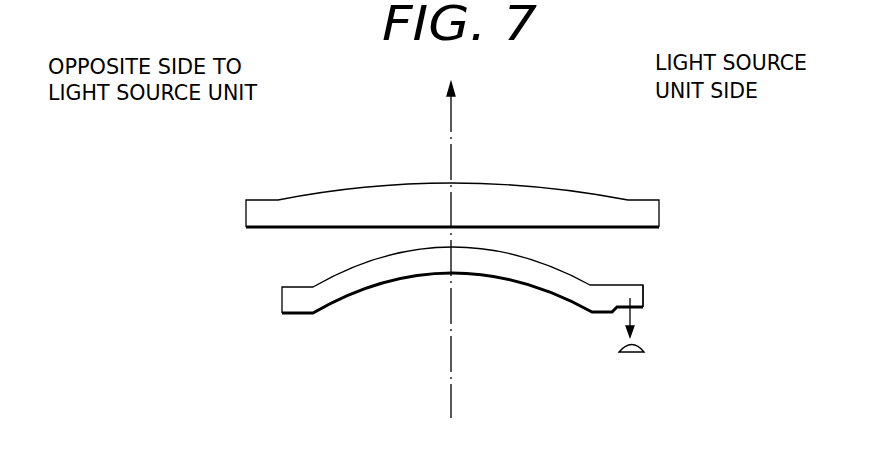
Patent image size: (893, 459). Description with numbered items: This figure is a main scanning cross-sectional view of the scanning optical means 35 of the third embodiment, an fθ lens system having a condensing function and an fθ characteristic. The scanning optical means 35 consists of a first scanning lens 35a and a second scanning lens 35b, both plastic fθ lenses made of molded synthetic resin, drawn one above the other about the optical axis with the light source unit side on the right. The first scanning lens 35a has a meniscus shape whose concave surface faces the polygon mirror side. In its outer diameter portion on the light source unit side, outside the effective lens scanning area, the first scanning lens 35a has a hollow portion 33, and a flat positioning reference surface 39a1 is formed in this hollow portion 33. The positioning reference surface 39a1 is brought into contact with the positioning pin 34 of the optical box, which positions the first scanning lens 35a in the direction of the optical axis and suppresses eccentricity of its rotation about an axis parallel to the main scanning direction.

The scanning optical means 35 is at (215, 147).
The first scanning lens 35a is at (350, 284).
The second scanning lens 35b is at (375, 197).
The positioning reference surface 39a1 is at (645, 290).
The hollow portion 33 is at (642, 308).
The positioning pin 34 is at (632, 358).